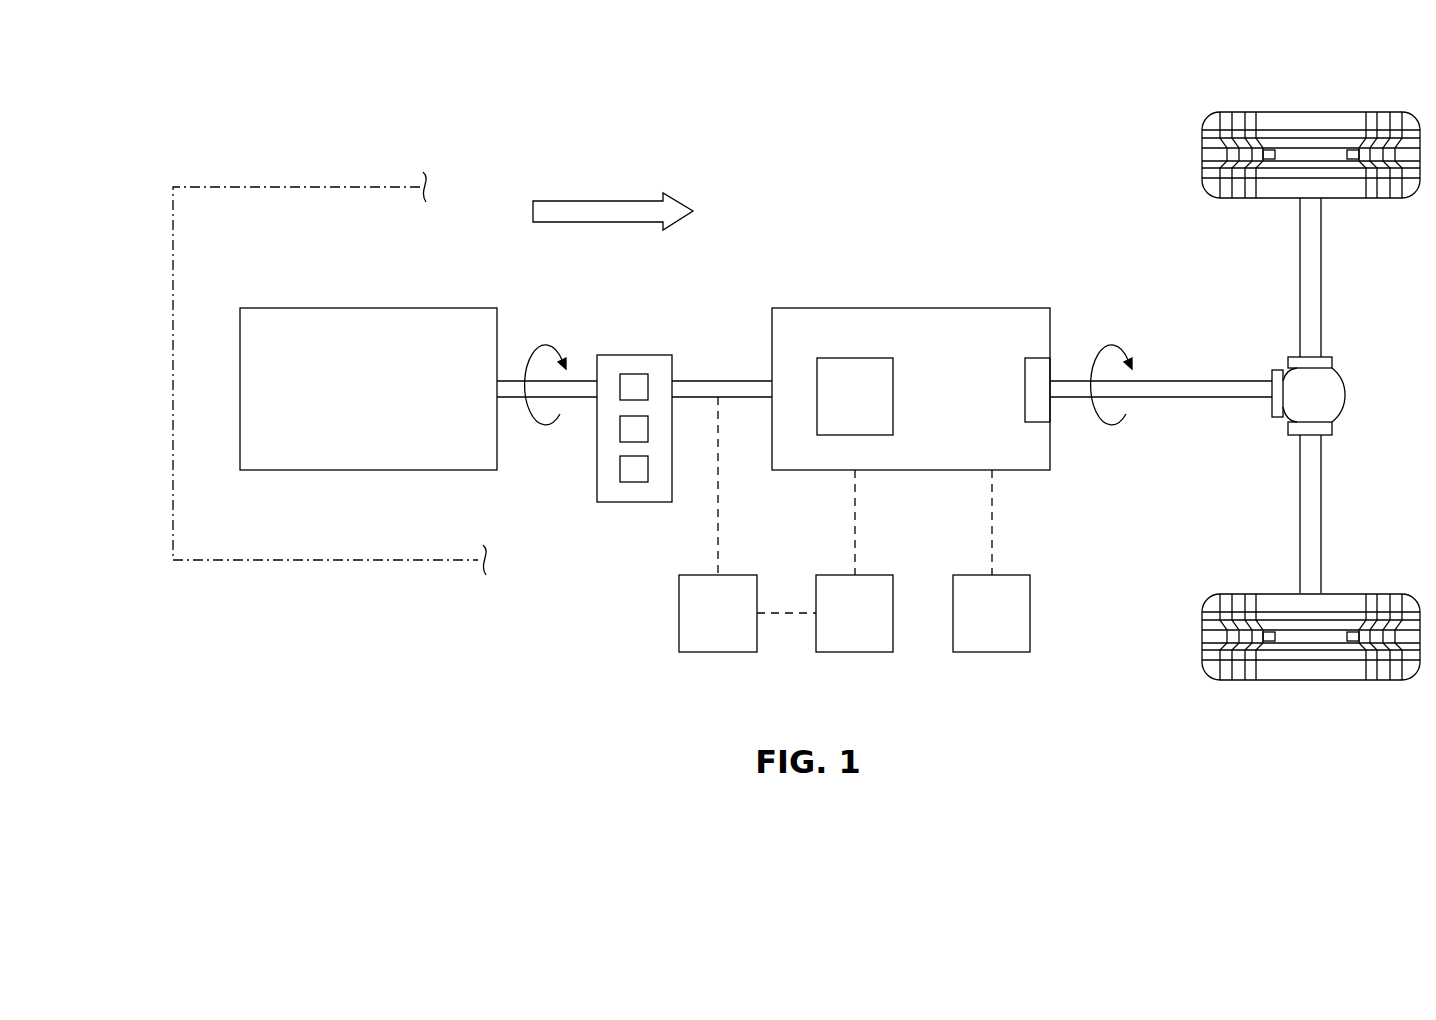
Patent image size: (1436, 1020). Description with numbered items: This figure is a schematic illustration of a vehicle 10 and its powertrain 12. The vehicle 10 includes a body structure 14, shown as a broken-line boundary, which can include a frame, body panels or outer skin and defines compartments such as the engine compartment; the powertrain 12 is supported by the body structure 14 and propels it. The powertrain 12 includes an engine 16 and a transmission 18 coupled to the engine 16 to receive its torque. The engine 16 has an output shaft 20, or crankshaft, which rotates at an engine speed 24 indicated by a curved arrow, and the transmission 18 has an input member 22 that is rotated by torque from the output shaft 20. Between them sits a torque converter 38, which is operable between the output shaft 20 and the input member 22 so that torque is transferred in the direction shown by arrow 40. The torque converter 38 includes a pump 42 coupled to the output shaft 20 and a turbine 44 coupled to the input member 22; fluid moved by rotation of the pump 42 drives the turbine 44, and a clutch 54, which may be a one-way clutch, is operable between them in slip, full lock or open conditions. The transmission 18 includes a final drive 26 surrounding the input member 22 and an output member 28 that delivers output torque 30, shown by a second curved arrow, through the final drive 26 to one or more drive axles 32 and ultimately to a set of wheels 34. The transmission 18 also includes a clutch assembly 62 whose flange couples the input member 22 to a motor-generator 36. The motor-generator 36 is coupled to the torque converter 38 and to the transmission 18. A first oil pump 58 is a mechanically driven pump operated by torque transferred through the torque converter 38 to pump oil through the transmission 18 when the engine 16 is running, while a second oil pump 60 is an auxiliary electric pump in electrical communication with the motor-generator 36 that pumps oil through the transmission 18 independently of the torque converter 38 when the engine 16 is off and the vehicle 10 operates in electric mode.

The vehicle 10 is at (218, 130).
The powertrain 12 is at (404, 605).
The body structure 14 is at (250, 562).
The engine 16 is at (300, 308).
The transmission 18 is at (928, 308).
The output shaft 20 is at (588, 380).
The input member 22 is at (748, 381).
The engine speed 24 is at (550, 358).
The final drive 26 is at (1025, 385).
The output member 28 is at (1208, 397).
The output torque 30 is at (1116, 358).
The drive axles 32 is at (1300, 248).
The wheels 34 is at (1203, 148).
The motor-generator 36 is at (702, 627).
The torque converter 38 is at (638, 355).
The direction of torque transfer 40 is at (583, 201).
The pump 42 is at (645, 374).
The turbine 44 is at (633, 482).
The clutch 54 is at (620, 430).
The first oil pump 58 is at (976, 627).
The second oil pump 60 is at (839, 627).
The clutch assembly 62 is at (839, 410).